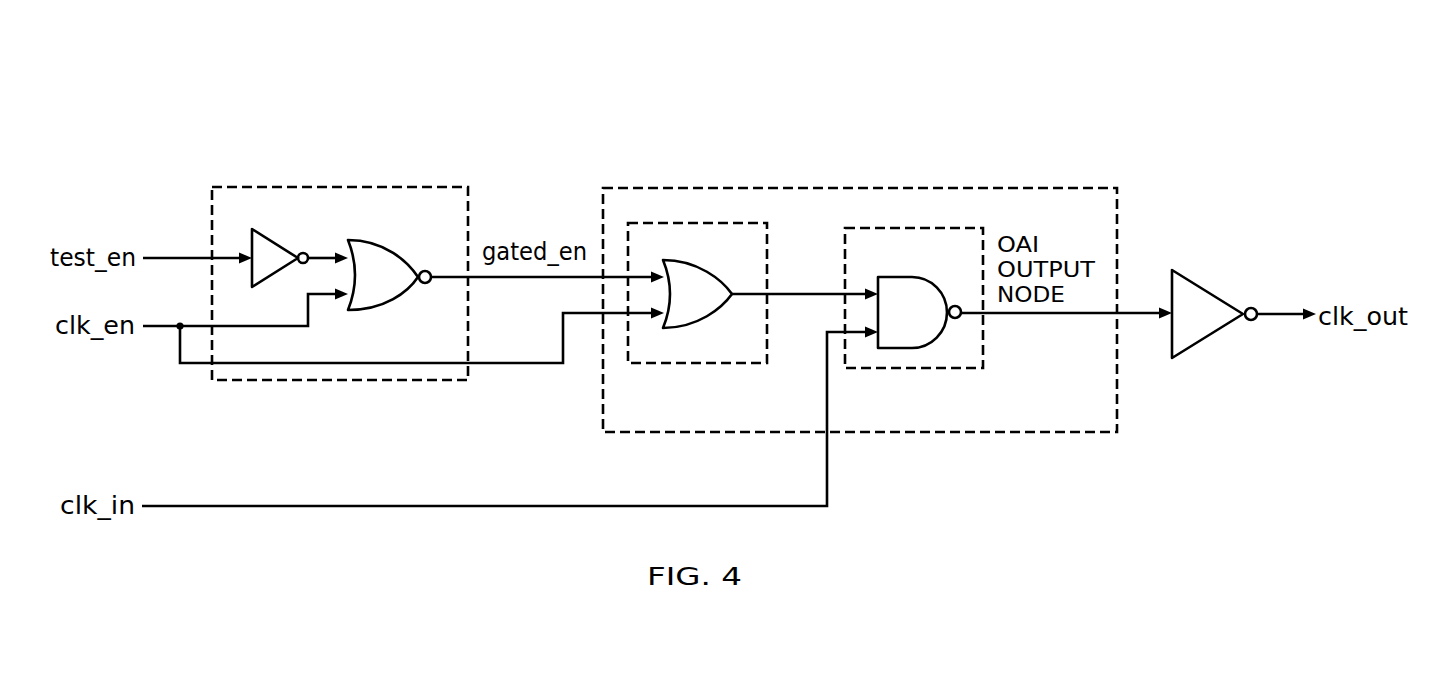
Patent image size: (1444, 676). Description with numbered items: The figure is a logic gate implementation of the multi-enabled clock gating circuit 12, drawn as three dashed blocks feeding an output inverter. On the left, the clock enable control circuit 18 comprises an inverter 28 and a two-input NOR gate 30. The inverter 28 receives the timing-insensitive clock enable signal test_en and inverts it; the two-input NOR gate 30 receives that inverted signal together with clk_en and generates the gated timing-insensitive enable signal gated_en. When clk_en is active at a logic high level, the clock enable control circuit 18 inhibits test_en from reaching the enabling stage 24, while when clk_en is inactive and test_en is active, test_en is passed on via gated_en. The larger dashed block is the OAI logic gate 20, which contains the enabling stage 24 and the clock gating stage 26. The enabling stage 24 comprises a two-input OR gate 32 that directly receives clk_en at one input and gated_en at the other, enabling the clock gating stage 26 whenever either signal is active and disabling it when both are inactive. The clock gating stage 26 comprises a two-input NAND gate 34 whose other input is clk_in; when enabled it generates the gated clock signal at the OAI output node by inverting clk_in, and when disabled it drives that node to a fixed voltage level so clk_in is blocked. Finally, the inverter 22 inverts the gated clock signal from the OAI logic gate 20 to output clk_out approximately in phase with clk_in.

The multi-enabled clock gating circuit 12 is at (1245, 106).
The clock enable control circuit 18 is at (356, 187).
The OAI logic gate 20 is at (841, 188).
The inverter 22 is at (1201, 288).
The enabling stage 24 is at (690, 363).
The clock gating stage 26 is at (925, 368).
The inverter 28 is at (266, 232).
The two-input NOR gate 30 is at (380, 246).
The two-input OR gate 32 is at (695, 263).
The two-input NAND gate 34 is at (906, 277).